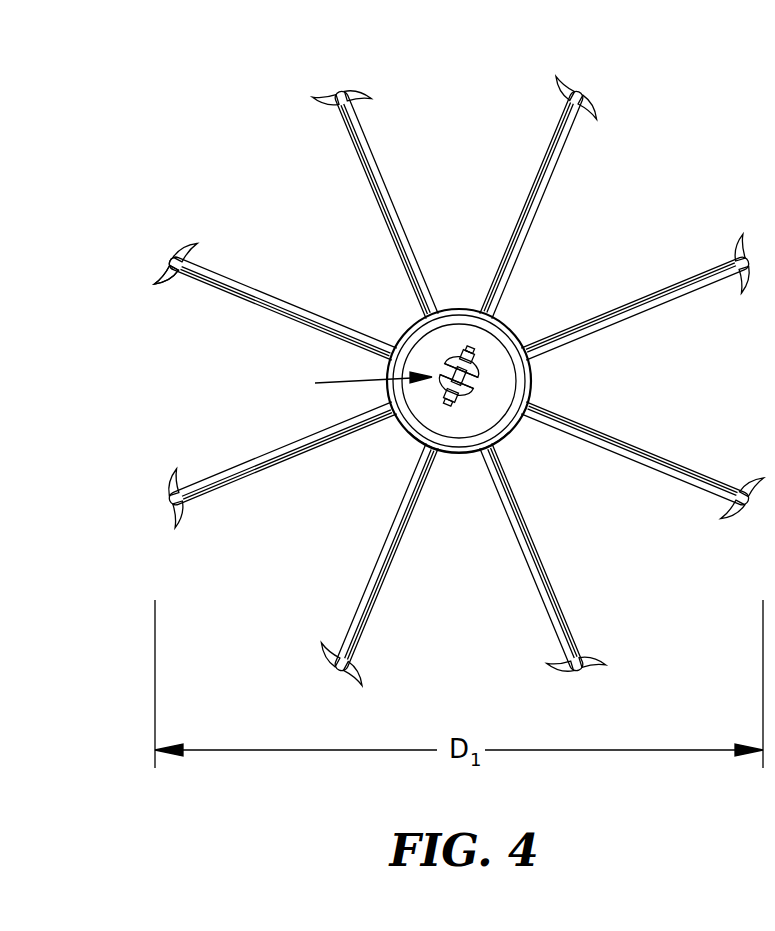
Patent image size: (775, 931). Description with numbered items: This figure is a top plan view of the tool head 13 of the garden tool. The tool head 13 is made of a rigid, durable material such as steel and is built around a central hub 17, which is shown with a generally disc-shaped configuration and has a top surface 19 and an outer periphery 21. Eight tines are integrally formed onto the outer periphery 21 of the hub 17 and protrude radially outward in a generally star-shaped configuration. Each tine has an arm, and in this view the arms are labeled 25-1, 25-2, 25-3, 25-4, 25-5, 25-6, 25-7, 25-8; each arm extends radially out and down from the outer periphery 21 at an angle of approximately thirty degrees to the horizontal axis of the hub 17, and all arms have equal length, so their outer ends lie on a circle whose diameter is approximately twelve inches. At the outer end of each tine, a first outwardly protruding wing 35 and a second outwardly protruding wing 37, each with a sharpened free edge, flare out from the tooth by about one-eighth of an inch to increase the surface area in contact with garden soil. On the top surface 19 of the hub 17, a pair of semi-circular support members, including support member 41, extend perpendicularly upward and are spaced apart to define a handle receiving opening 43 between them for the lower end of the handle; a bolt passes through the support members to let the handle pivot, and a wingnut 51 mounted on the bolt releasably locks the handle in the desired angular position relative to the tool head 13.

The tool head 13 is at (265, 153).
The central hub 17 is at (484, 364).
The top surface 19 is at (473, 311).
The outer periphery 21 is at (467, 457).
The arm 25-1 is at (630, 443).
The arm 25-2 is at (688, 280).
The arm 25-3 is at (568, 132).
The arm 25-4 is at (362, 132).
The arm 25-5 is at (262, 306).
The arm 25-6 is at (238, 466).
The arm 25-7 is at (366, 592).
The arm 25-8 is at (553, 590).
The first outwardly protruding wing 35 is at (175, 247).
The second outwardly protruding wing 37 is at (158, 265).
The support member 41 is at (482, 372).
The handle receiving opening 43 is at (357, 382).
The wingnut 51 is at (392, 442).